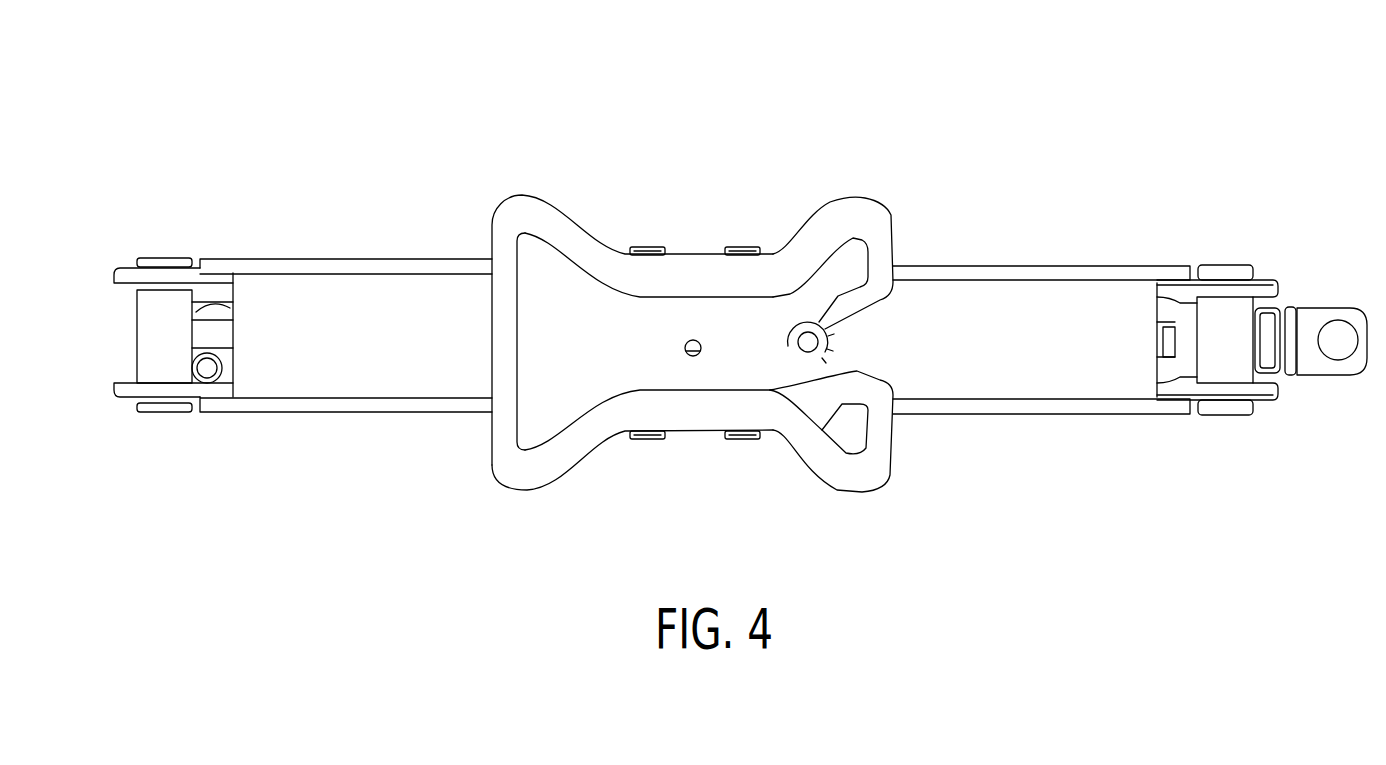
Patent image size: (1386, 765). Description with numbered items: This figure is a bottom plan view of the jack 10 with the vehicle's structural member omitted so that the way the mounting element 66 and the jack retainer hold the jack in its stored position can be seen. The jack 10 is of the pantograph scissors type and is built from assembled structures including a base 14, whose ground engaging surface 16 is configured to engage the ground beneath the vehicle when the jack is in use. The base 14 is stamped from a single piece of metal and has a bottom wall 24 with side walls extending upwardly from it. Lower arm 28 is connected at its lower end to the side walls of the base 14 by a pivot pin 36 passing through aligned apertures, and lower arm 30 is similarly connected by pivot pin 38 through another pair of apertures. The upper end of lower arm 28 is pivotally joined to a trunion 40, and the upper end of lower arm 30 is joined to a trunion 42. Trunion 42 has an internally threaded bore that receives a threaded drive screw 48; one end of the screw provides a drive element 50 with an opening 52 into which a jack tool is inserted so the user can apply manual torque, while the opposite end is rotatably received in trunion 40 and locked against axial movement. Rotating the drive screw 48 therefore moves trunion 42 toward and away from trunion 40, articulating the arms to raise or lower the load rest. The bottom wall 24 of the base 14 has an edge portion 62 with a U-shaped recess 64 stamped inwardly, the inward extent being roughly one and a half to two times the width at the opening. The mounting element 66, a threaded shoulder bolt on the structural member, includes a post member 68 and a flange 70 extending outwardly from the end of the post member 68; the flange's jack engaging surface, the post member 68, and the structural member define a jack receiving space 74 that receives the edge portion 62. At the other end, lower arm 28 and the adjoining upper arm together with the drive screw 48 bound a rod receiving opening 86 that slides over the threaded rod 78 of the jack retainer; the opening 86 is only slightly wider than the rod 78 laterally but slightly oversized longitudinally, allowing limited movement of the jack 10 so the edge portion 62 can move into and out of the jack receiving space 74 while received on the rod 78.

The jack 10 is at (933, 121).
The base 14 is at (565, 225).
The ground engaging surface 16 is at (645, 432).
The bottom wall 24 is at (858, 243).
The lower arm 28 is at (342, 380).
The lower arm 30 is at (1042, 388).
The pivot pin 36 is at (648, 246).
The pivot pin 38 is at (746, 246).
The trunion 40 is at (140, 347).
The trunion 42 is at (1232, 375).
The drive screw 48 is at (1173, 328).
The drive element 50 is at (1305, 322).
The opening 52 is at (1343, 347).
The edge portion 62 is at (783, 355).
The U-shaped recess 64 is at (858, 372).
The mounting element 66 is at (812, 330).
The post member 68 is at (806, 352).
The flange 70 is at (834, 343).
The jack receiving space 74 is at (814, 354).
The threaded rod 78 is at (204, 386).
The rod receiving opening 86 is at (213, 380).